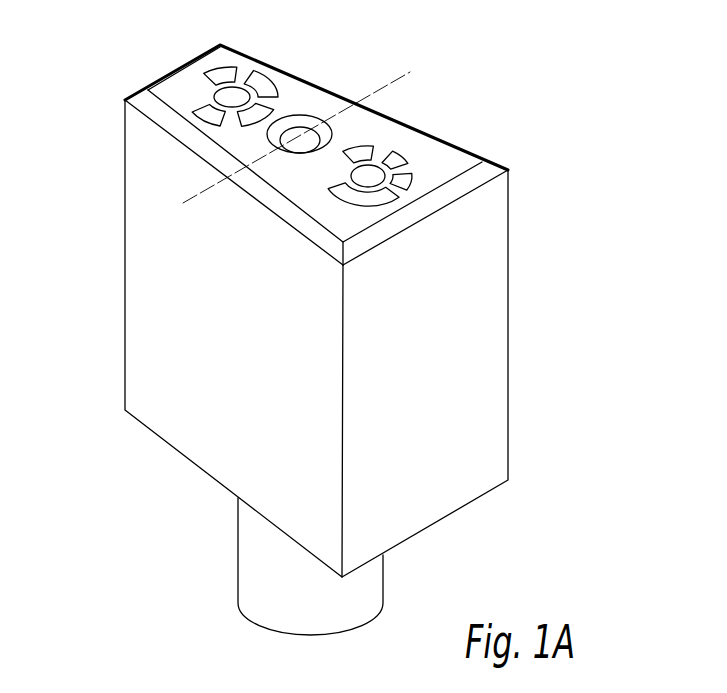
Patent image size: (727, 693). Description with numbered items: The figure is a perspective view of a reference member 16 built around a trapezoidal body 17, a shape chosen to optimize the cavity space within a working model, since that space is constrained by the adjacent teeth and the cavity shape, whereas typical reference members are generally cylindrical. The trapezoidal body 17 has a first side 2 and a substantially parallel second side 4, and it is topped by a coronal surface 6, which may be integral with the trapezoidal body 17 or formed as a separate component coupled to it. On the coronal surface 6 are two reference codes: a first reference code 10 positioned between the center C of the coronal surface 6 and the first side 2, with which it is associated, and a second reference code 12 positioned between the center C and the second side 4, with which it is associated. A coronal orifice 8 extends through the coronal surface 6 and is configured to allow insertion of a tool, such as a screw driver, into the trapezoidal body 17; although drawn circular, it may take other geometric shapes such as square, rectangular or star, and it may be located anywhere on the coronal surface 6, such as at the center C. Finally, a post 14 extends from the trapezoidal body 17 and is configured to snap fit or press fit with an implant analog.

The first side 2 is at (122, 182).
The second side 4 is at (493, 425).
The coronal surface 6 is at (362, 125).
The coronal orifice 8 is at (301, 116).
The first reference code 10 is at (287, 80).
The second reference code 12 is at (398, 155).
The post 14 is at (384, 588).
The reference member 16 is at (527, 137).
The trapezoidal body 17 is at (543, 315).
The center C is at (218, 183).